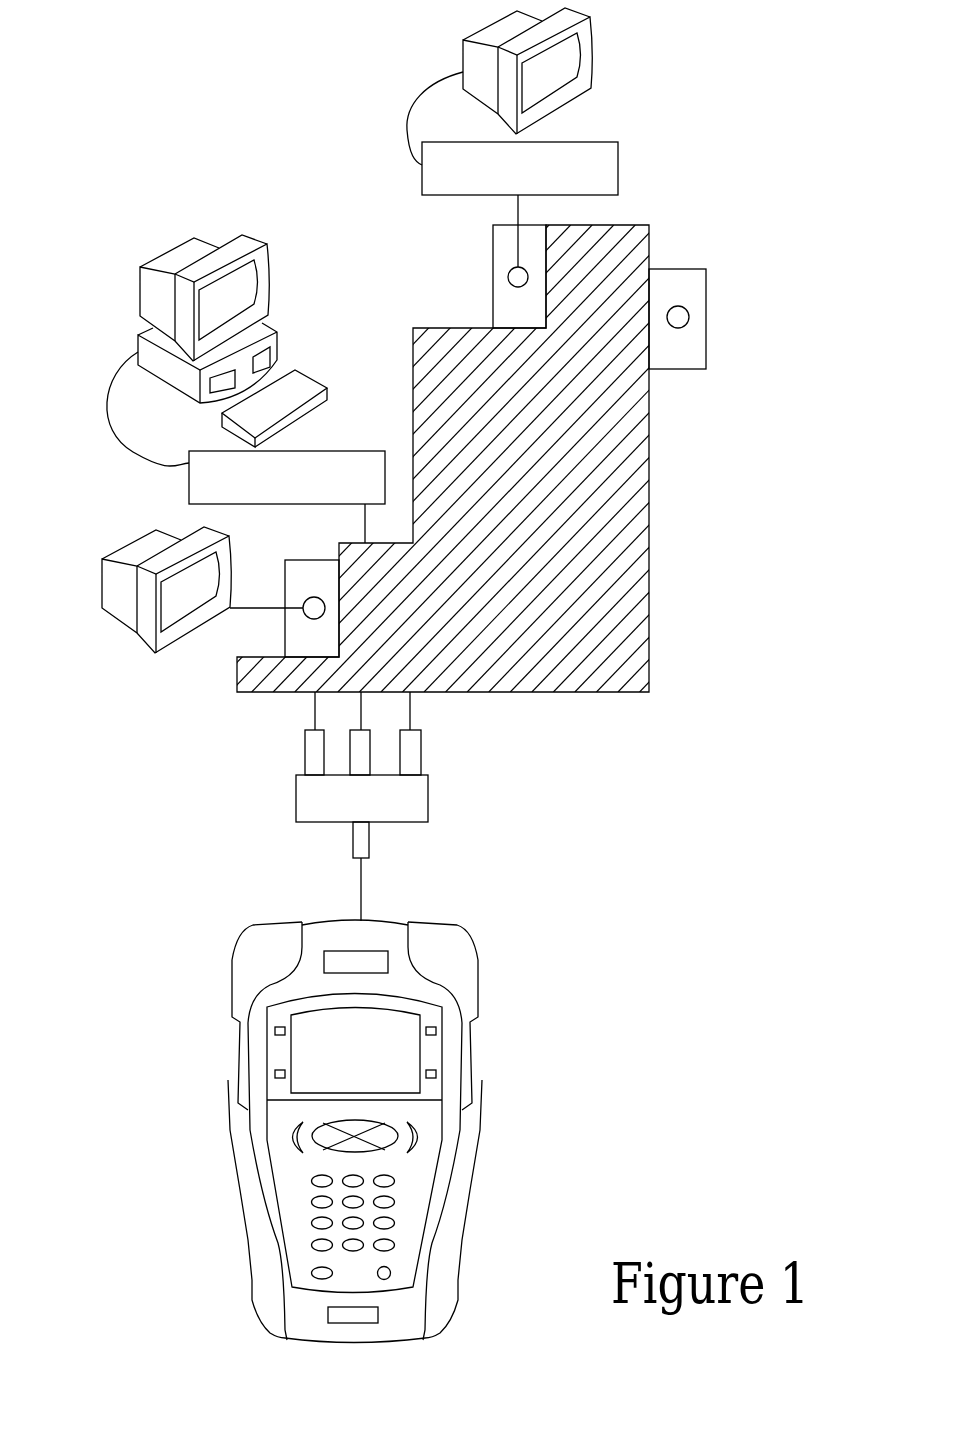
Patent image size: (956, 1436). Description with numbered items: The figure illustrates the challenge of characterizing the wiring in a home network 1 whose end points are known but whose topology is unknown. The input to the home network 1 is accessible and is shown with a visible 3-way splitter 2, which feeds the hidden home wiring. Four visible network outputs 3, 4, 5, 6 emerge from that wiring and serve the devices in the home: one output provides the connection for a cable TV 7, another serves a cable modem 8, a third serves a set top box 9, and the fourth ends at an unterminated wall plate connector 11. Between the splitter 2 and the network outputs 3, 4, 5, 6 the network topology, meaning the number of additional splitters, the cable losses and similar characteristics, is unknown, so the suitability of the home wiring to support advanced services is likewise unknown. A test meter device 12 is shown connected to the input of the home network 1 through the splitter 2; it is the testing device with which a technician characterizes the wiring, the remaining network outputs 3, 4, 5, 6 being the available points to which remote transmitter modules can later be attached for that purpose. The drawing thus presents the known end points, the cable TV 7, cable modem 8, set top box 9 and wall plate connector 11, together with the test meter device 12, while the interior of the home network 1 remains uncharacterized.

The home network 1 is at (305, 134).
The 3-way splitter 2 is at (296, 800).
The network output 3 is at (304, 616).
The network output 4 is at (367, 543).
The network output 5 is at (508, 277).
The network output 6 is at (678, 317).
The cable TV 7 is at (117, 620).
The cable modem 8 is at (189, 493).
The set top box 9 is at (618, 168).
The unterminated wall plate connector 11 is at (678, 269).
The test meter device 12 is at (267, 920).